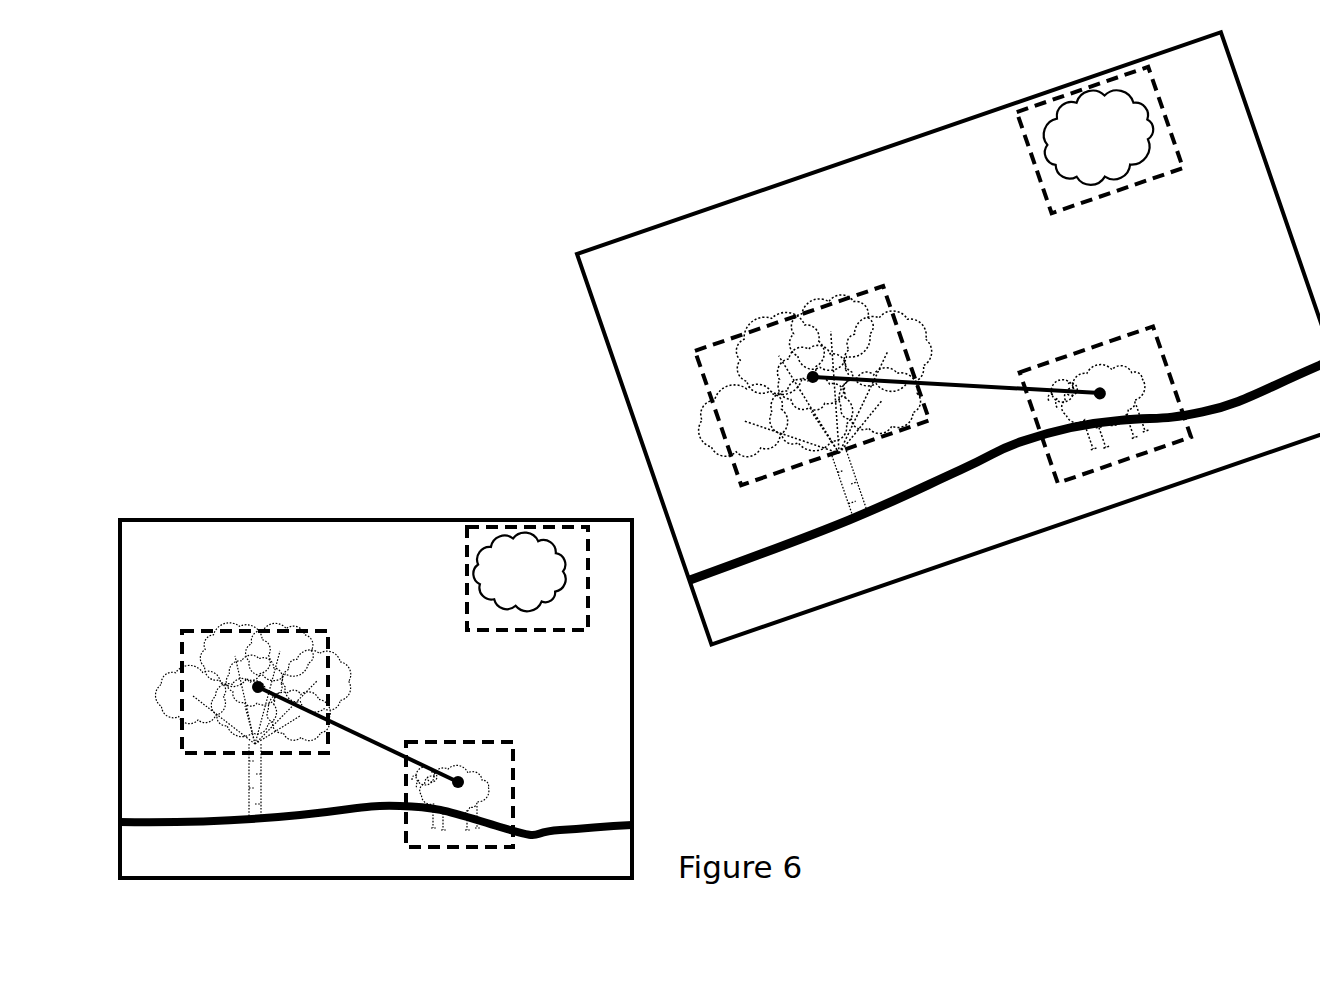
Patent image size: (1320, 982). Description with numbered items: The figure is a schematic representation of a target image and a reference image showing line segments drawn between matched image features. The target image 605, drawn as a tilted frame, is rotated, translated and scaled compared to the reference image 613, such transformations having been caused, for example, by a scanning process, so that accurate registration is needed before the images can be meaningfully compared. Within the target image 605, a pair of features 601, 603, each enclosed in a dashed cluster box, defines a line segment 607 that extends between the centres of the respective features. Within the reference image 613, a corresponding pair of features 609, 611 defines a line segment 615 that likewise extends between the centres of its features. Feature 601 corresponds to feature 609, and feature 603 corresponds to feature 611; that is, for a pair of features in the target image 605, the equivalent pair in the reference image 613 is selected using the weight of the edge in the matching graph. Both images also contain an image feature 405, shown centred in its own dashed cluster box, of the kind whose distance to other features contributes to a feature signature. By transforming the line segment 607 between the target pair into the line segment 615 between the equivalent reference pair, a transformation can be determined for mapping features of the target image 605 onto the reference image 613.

The image feature 405 is at (825, 348).
The feature 601 is at (1053, 366).
The feature 603 is at (652, 324).
The target image 605 is at (665, 173).
The line segment 607 is at (956, 365).
The feature 609 is at (510, 762).
The feature 611 is at (252, 720).
The reference image 613 is at (214, 473).
The line segment 615 is at (358, 734).